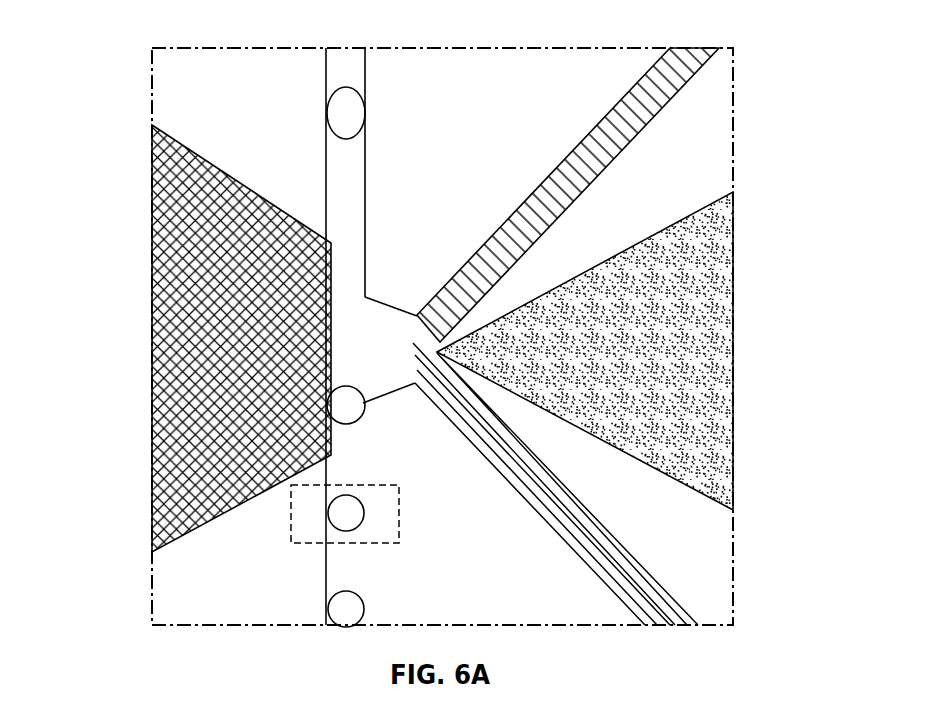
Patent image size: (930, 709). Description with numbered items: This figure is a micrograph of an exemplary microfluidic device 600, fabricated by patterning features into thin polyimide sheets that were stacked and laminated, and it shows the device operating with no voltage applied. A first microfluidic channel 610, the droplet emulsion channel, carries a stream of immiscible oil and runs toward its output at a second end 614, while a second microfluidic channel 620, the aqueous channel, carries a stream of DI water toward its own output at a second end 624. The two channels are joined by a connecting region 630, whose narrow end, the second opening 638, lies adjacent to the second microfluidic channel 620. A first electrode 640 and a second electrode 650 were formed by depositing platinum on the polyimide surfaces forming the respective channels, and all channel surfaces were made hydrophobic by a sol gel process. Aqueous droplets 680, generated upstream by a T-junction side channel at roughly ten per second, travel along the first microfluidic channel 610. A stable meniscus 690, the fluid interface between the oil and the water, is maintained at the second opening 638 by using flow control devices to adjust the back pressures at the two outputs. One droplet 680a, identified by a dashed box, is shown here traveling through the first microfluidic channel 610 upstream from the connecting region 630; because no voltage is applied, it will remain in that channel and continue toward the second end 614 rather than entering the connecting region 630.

The microfluidic device 600 is at (116, 42).
The first microfluidic channel 610 is at (326, 573).
The second end of the first microfluidic channel 614 is at (366, 56).
The second microfluidic channel 620 is at (646, 576).
The second end of the second microfluidic channel 624 is at (700, 65).
The connecting region 630 is at (378, 300).
The second opening of the connecting region 638 is at (414, 398).
The first electrode 640 is at (152, 310).
The second electrode 650 is at (723, 352).
The aqueous droplets 680 is at (327, 113).
The aqueous droplet 680a is at (396, 545).
The meniscus 690 is at (413, 294).